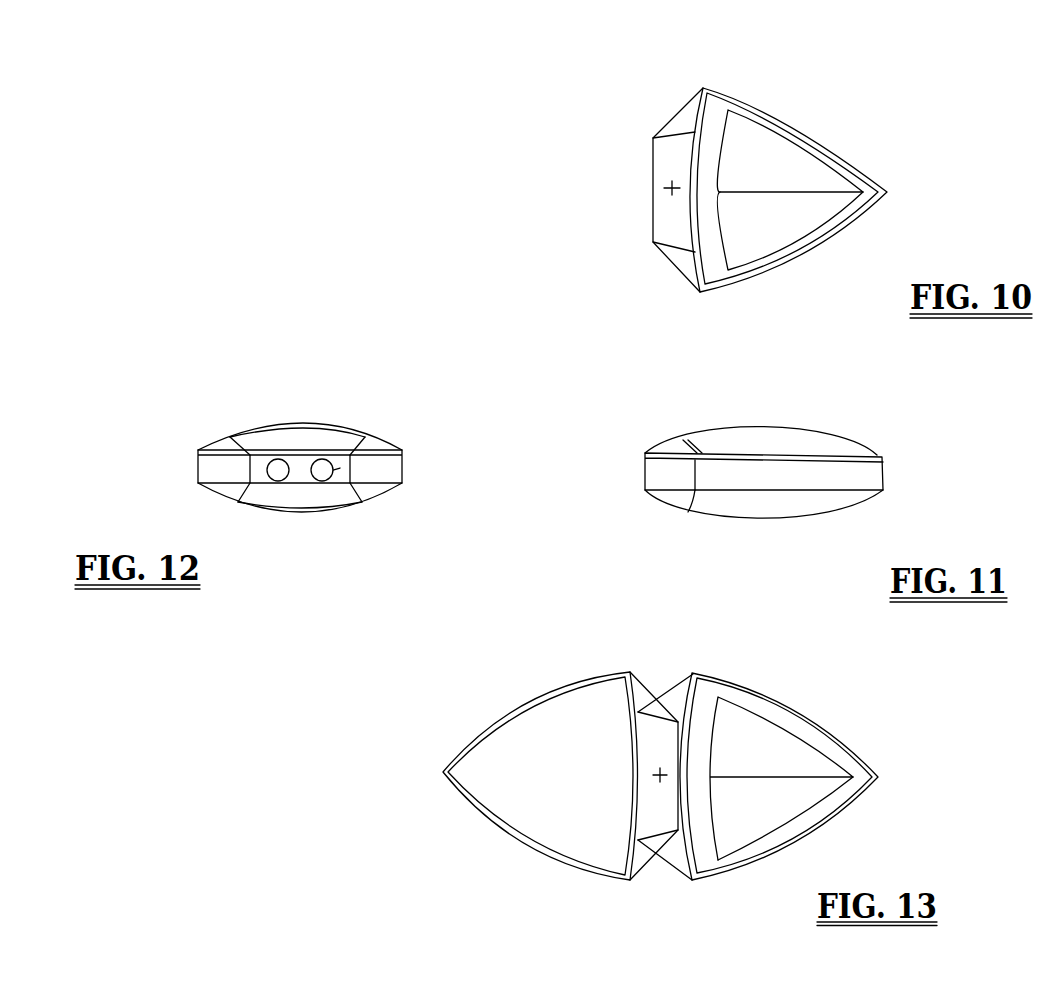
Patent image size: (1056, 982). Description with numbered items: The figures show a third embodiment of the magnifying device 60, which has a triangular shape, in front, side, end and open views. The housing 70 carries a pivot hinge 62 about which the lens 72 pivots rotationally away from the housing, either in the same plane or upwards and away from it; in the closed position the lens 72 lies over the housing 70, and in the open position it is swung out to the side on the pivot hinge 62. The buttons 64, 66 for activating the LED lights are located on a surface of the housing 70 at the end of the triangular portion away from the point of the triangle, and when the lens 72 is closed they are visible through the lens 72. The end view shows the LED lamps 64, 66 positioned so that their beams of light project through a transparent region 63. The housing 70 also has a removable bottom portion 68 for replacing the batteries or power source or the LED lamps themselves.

In FIG. 10, the magnifying device 60 is at (597, 147).
In FIG. 11, the magnifying device 60 is at (900, 403).
In FIG. 12, the magnifying device 60 is at (167, 445).
In FIG. 13, the magnifying device 60 is at (927, 715).
In FIG. 10, the pivot hinge 62 is at (665, 222).
In FIG. 11, the pivot hinge 62 is at (682, 445).
In FIG. 13, the pivot hinge 62 is at (657, 732).
In FIG. 12, the transparent region 63 is at (340, 468).
In FIG. 10, the button / LED lamp 64 is at (810, 160).
In FIG. 12, the button / LED lamp 64 is at (280, 480).
In FIG. 13, the button / LED lamp 64 is at (767, 735).
In FIG. 10, the button / LED lamp 66 is at (822, 210).
In FIG. 12, the button / LED lamp 66 is at (320, 478).
In FIG. 13, the button / LED lamp 66 is at (783, 810).
In FIG. 11, the removable bottom portion 68 is at (797, 507).
In FIG. 12, the removable bottom portion 68 is at (300, 497).
In FIG. 10, the housing 70 is at (773, 98).
In FIG. 11, the housing 70 is at (872, 477).
In FIG. 12, the housing 70 is at (398, 473).
In FIG. 13, the housing 70 is at (779, 776).
In FIG. 11, the lens 72 is at (767, 435).
In FIG. 12, the lens 72 is at (277, 427).
In FIG. 13, the lens 72 is at (510, 750).